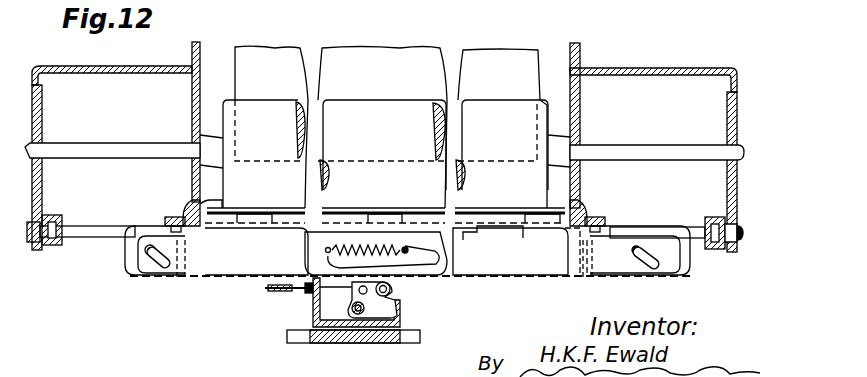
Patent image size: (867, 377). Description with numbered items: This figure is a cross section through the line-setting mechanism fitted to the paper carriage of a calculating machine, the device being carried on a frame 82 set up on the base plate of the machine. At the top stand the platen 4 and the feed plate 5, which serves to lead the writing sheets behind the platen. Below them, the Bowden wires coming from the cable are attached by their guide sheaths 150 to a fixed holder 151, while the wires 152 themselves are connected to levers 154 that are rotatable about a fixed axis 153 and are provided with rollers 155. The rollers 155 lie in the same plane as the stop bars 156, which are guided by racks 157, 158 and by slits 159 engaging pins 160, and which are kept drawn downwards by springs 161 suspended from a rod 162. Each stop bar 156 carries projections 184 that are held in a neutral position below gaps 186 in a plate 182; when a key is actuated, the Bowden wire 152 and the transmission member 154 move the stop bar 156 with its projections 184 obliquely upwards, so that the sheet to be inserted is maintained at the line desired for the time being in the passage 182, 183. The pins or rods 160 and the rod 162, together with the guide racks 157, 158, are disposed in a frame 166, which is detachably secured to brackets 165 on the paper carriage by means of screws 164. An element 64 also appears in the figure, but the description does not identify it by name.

The platen 4 is at (384, 110).
The feed plate 5 is at (298, 68).
The rod 64 is at (88, 230).
The frame 82 is at (300, 340).
The guide sheaths 150 is at (293, 290).
The fixed holder 151 is at (313, 312).
The Bowden wires 152 is at (335, 290).
The fixed axis 153 is at (385, 330).
The levers 154 is at (370, 300).
The rollers 155 is at (393, 290).
The stop bars 156 is at (538, 265).
The guide rack 157 is at (200, 248).
The guide rack 158 is at (580, 240).
The slits 159 is at (158, 264).
The pins 160 is at (143, 248).
The springs 161 is at (357, 245).
The rod 162 is at (406, 246).
The screws 164 is at (176, 234).
The brackets 165 is at (190, 203).
The frame 166 is at (128, 270).
The plate 182 is at (480, 230).
The passage 183 is at (567, 187).
The projections 184 is at (268, 216).
The gaps 186 is at (262, 210).